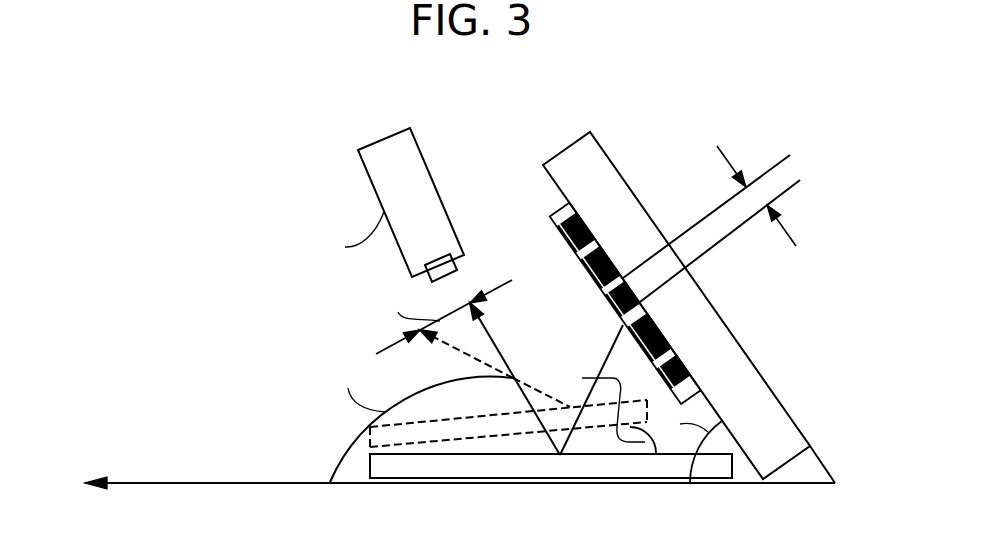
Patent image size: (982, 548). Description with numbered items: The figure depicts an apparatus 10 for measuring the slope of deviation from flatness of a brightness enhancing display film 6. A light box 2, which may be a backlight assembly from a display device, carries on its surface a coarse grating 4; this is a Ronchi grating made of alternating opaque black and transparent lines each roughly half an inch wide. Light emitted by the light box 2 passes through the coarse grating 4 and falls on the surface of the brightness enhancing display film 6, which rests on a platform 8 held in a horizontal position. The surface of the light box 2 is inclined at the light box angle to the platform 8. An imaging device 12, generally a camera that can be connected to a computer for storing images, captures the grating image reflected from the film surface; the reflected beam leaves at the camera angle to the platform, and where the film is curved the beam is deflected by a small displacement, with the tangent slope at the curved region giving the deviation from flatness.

The apparatus 10 is at (233, 212).
The imaging device 12 is at (413, 170).
The coarse grating 4 is at (606, 268).
The light box 2 is at (742, 380).
The brightness enhancing display film 6 is at (413, 465).
The platform 8 is at (243, 485).